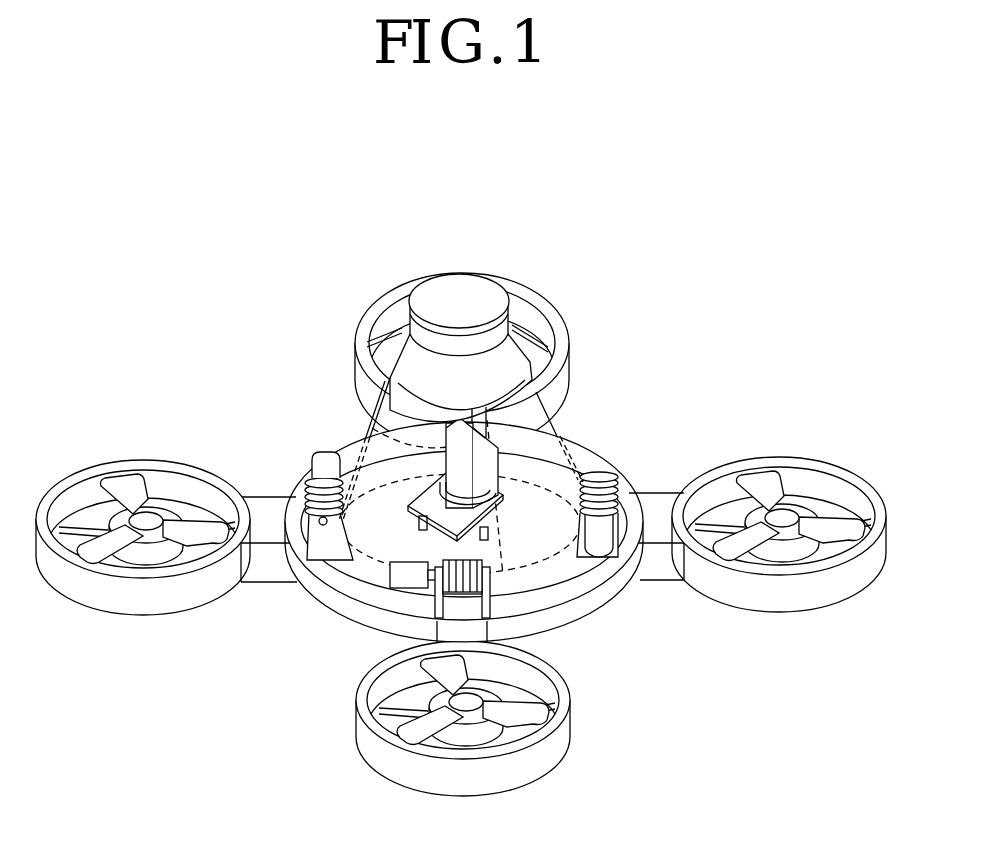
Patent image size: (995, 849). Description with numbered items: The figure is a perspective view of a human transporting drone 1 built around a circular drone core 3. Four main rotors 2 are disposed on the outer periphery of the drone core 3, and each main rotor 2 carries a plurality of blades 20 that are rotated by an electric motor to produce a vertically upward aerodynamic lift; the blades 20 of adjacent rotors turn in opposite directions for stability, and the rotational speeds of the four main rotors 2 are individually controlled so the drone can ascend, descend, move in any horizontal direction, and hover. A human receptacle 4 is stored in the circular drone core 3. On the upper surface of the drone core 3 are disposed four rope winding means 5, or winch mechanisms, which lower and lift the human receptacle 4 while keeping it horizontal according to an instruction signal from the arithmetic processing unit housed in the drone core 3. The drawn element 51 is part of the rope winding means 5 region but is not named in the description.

The human transporting drone 1 is at (270, 308).
The main rotor 2 is at (559, 372).
The drone core 3 is at (607, 618).
The human receptacle 4 is at (378, 391).
The rope winding means 5 is at (464, 528).
The blade 20 is at (130, 487).
The coil 51 is at (312, 466).